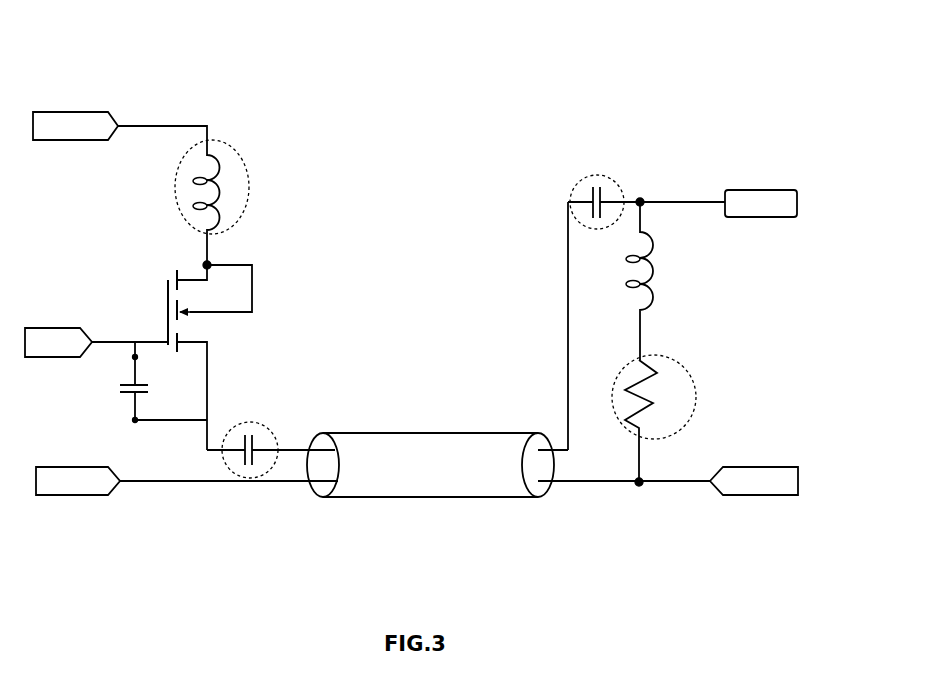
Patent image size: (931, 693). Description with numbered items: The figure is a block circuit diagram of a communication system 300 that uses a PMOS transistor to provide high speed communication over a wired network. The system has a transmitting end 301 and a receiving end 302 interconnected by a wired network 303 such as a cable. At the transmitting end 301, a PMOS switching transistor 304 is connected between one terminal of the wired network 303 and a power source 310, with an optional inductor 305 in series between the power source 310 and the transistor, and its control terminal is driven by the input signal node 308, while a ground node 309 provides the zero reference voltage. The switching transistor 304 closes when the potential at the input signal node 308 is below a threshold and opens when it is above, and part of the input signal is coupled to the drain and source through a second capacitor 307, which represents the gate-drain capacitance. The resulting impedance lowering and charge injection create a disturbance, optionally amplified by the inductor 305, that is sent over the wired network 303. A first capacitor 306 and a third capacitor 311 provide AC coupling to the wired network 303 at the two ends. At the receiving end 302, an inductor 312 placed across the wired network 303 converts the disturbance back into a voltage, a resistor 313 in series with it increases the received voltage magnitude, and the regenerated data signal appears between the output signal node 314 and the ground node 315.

The communication system 300 is at (492, 118).
The transmitting end 301 is at (162, 70).
The receiving end 302 is at (718, 120).
The wired network 303 is at (400, 432).
The PMOS switching transistor 304 is at (166, 297).
The inductor 305 is at (222, 187).
The first capacitor 306 is at (258, 442).
The second capacitor 307 is at (133, 398).
The input signal node 308 is at (62, 358).
The ground node 309 is at (90, 496).
The power source 310 is at (90, 140).
The third capacitor 311 is at (607, 195).
The inductor 312 is at (653, 270).
The resistor 313 is at (652, 403).
The output signal node 314 is at (757, 190).
The ground node 315 is at (780, 496).